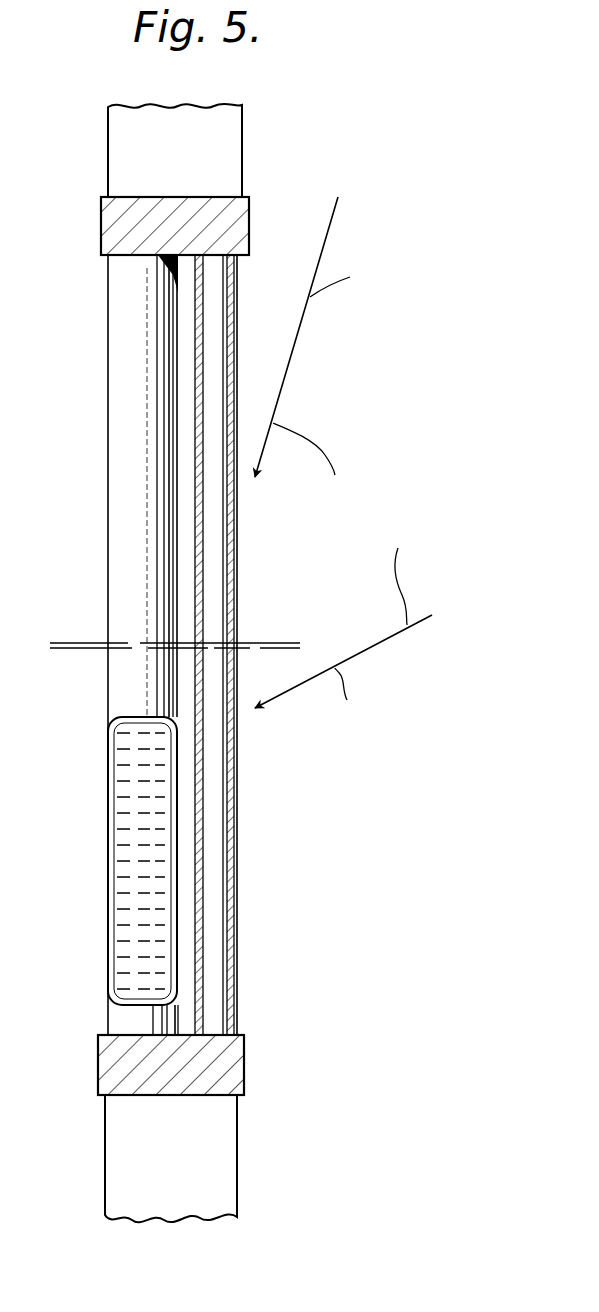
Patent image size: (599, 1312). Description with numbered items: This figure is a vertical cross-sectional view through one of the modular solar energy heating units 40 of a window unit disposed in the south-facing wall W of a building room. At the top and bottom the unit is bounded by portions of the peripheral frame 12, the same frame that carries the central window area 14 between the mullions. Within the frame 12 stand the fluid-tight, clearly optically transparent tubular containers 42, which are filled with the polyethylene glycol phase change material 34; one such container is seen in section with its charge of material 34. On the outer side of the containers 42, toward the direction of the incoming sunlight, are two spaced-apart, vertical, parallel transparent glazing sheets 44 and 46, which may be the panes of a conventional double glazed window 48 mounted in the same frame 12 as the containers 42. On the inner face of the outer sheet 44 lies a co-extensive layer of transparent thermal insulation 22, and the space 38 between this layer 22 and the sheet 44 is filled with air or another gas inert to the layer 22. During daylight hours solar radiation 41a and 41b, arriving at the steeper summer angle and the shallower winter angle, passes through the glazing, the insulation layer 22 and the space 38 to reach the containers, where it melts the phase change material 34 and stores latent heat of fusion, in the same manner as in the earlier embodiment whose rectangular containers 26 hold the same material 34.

The south-facing wall W is at (243, 137).
The central window area 14 is at (252, 217).
The peripheral frame 12 is at (244, 1072).
The tubular containers 42 is at (104, 417).
The fluid-tight containers 26 is at (140, 245).
The transparent glazing sheet 46 is at (199, 992).
The space 38 is at (214, 812).
The transparent insulation layer 22 is at (218, 922).
The outer glazing sheet 44 is at (235, 884).
The polyethylene glycol phase change material 34 is at (148, 857).
The modular solar energy heating units 40 is at (256, 306).
The double glazed window 48 is at (239, 385).
The solar radiation 41b is at (290, 366).
The solar radiation 41a is at (375, 645).